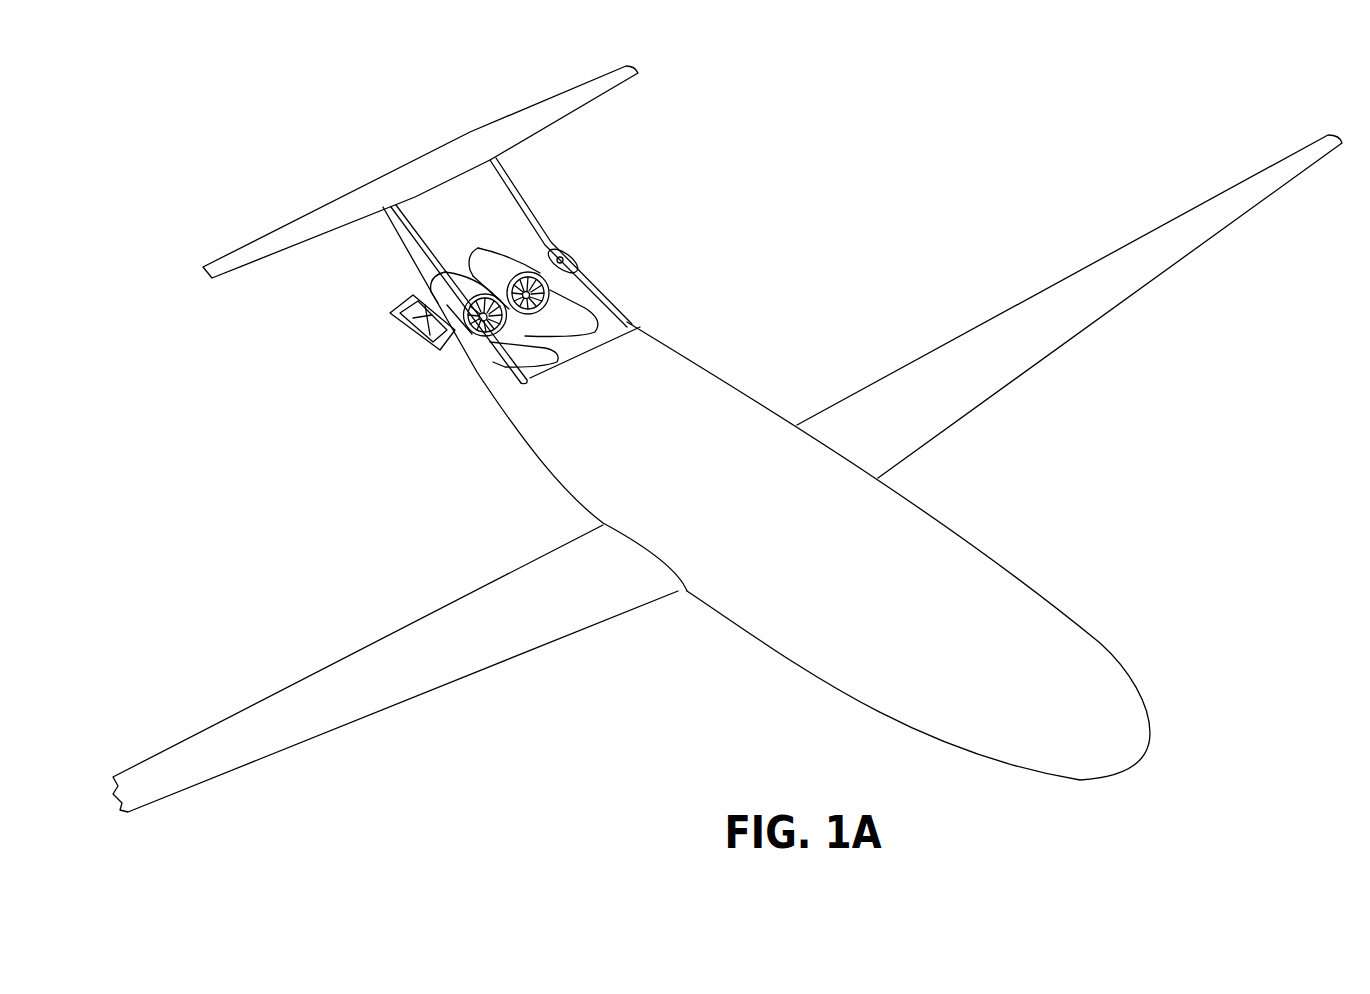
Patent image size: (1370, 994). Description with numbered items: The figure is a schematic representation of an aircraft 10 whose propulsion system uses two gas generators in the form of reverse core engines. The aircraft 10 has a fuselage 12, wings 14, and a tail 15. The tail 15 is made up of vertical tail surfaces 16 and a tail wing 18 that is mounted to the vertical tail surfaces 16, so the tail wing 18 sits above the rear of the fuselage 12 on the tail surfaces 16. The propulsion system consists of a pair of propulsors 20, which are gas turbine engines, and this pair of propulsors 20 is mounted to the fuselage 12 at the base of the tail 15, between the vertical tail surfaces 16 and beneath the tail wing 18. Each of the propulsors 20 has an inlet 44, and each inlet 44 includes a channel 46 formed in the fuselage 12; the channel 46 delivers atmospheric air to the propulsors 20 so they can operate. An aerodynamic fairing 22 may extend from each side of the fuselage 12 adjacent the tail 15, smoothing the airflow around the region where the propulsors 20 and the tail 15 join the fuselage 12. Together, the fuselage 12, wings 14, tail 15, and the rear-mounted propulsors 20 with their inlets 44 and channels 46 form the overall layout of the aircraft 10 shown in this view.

The aircraft 10 is at (705, 245).
The fuselage 12 is at (975, 573).
The wings 14 is at (472, 652).
The tail 15 is at (392, 265).
The vertical tail surfaces 16 is at (513, 215).
The tail wing 18 is at (447, 162).
The propulsors 20 is at (490, 272).
The aerodynamic fairing 22 is at (410, 332).
The inlet 44 is at (553, 285).
The channel 46 is at (583, 330).